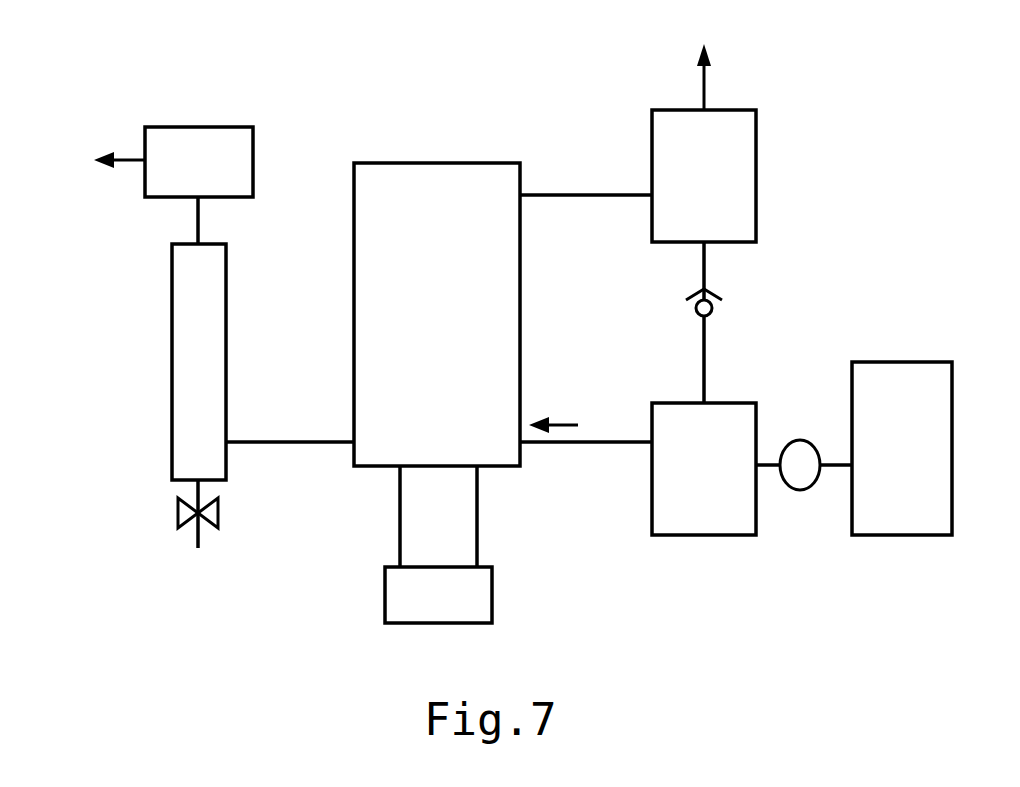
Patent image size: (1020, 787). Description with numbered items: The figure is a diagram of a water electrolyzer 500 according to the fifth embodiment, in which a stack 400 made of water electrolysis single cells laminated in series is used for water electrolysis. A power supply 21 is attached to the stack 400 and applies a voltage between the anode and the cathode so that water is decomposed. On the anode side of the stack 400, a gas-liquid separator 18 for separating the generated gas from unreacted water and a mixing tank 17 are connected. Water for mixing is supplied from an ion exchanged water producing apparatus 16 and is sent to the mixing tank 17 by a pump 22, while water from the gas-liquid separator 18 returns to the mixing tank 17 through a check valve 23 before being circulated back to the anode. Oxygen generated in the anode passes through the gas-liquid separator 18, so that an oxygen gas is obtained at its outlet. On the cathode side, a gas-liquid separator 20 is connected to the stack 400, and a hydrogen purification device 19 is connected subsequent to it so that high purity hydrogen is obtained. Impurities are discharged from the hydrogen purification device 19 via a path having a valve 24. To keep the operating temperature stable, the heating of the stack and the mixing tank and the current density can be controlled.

The water electrolyzer 500 is at (75, 26).
The stack 400 is at (437, 314).
The ion exchanged water producing apparatus 16 is at (902, 448).
The mixing tank 17 is at (704, 469).
The gas-liquid separator 18 is at (704, 176).
The hydrogen purification device 19 is at (199, 362).
The gas-liquid separator 20 is at (199, 162).
The power supply 21 is at (438, 595).
The pump 22 is at (802, 490).
The check valve 23 is at (730, 302).
The valve 24 is at (226, 515).